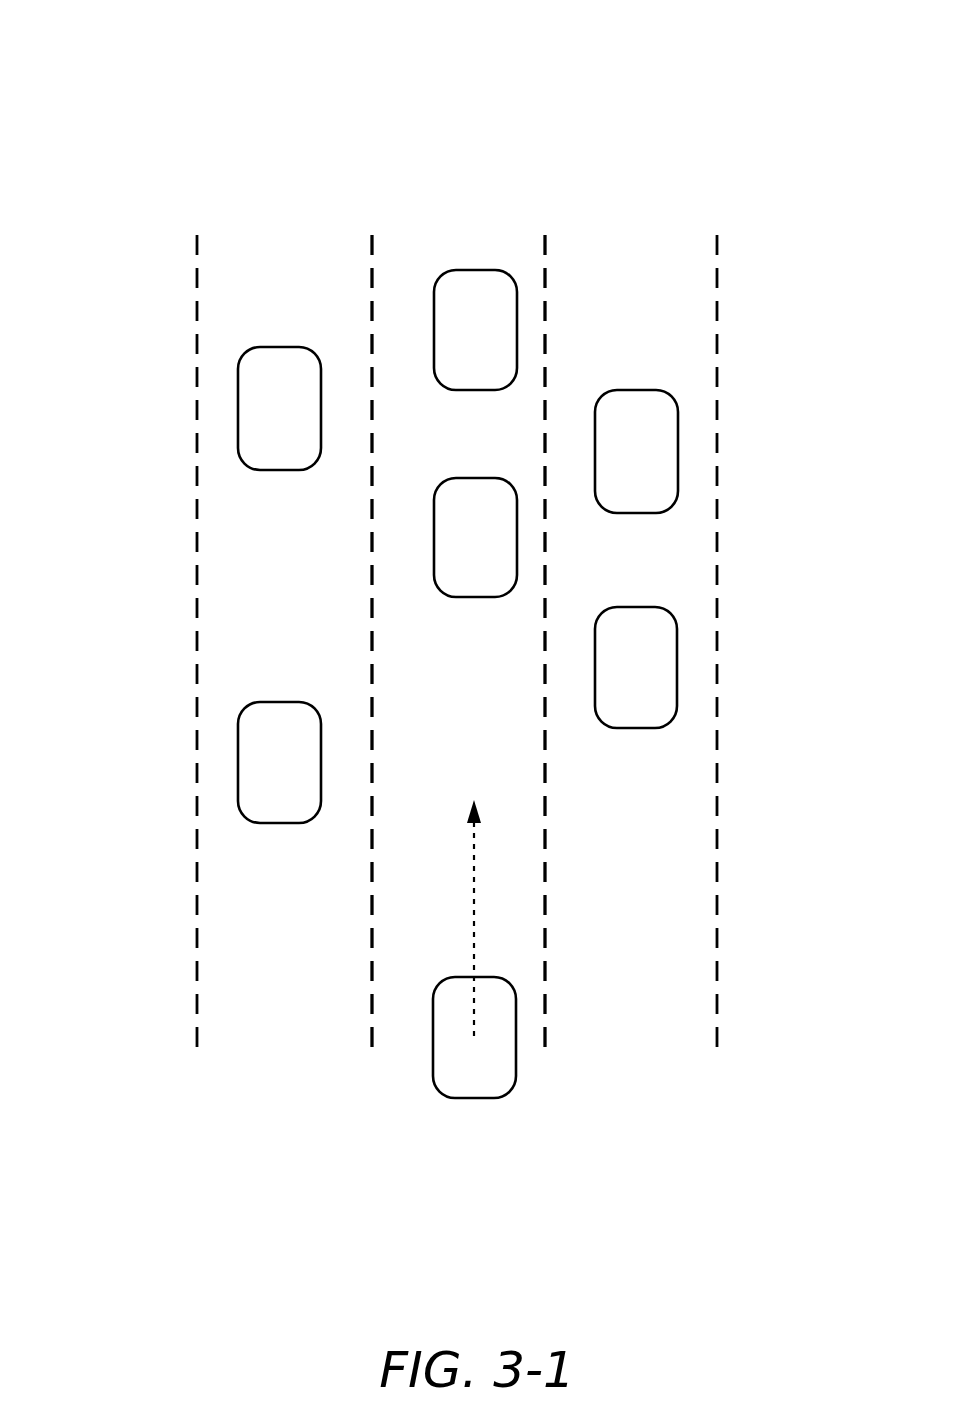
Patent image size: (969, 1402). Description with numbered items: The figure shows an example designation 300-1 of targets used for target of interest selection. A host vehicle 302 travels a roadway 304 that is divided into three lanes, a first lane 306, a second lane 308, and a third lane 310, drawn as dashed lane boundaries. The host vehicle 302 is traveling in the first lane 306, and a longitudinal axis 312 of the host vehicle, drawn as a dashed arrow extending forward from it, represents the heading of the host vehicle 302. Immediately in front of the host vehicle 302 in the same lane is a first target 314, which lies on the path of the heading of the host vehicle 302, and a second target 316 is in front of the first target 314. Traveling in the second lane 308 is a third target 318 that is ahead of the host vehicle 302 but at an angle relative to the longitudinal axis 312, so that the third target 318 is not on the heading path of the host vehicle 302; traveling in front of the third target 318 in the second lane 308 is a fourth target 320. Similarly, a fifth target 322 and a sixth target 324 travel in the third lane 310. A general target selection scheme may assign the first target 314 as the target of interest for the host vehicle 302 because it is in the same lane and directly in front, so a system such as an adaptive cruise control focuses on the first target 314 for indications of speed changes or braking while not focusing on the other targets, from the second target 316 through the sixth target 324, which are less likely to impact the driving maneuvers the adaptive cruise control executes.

The designation of targets 300-1 is at (136, 46).
The host vehicle 302 is at (473, 1098).
The roadway 304 is at (470, 710).
The lane 306 is at (447, 220).
The lane 308 is at (265, 220).
The lane 310 is at (625, 220).
The longitudinal axis 312 is at (474, 800).
The target T1 314 is at (476, 598).
The target T2 316 is at (476, 391).
The target T3 318 is at (238, 760).
The target T4 320 is at (238, 405).
The target T5 322 is at (677, 665).
The target T6 324 is at (677, 451).